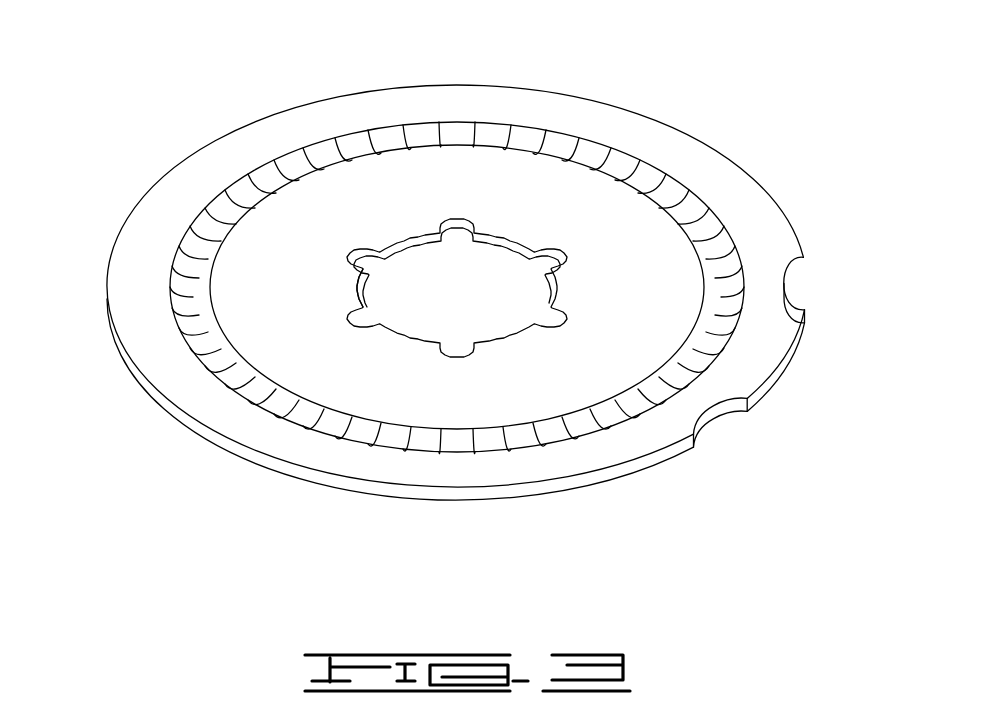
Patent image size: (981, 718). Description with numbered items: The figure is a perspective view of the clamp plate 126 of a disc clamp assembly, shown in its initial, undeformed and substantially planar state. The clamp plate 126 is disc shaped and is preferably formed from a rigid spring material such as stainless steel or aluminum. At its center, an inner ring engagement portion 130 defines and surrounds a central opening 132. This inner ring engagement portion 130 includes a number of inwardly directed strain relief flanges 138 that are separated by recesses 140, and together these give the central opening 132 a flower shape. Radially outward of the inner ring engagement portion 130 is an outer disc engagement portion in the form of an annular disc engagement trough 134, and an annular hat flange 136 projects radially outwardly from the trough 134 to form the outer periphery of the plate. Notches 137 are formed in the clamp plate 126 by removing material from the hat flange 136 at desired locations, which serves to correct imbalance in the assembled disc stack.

The clamp plate 126 is at (223, 88).
The inner ring engagement portion 130 is at (408, 203).
The central opening 132 is at (463, 280).
The disc engagement trough 134 is at (222, 217).
The annular hat flange 136 is at (147, 287).
The notches 137 is at (807, 283).
The strain relief flanges 138 is at (362, 288).
The recesses 140 is at (372, 238).